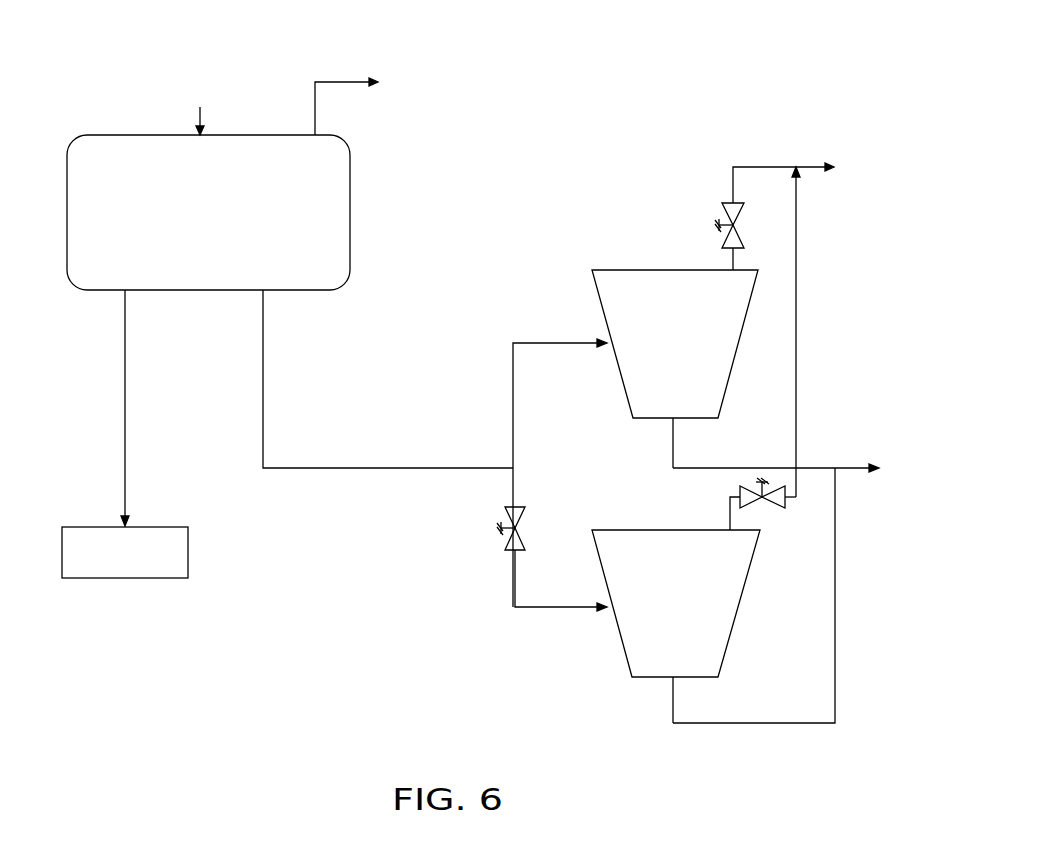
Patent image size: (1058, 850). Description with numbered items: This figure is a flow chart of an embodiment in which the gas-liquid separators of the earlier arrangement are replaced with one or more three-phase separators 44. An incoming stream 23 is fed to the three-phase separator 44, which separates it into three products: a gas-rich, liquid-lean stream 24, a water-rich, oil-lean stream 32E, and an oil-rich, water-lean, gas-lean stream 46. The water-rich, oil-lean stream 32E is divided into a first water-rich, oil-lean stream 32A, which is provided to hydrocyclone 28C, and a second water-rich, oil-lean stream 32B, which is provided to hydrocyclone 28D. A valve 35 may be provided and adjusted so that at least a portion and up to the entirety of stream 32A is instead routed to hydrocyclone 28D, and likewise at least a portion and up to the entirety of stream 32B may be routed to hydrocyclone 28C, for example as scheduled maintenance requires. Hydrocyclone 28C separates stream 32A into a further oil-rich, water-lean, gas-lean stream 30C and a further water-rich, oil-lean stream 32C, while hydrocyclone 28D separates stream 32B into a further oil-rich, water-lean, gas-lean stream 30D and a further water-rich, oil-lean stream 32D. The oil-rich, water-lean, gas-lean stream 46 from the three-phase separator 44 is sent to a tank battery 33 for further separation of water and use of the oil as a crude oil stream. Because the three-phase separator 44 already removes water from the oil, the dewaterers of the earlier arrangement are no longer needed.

The stream 23 is at (203, 114).
The gas-rich, liquid-lean stream 24 is at (357, 80).
The hydrocyclone 28C is at (623, 268).
The hydrocyclone 28D is at (622, 640).
The further oil-rich, water-lean, gas-lean stream 30C is at (728, 192).
The further oil-rich, water-lean, gas-lean stream 30D is at (793, 198).
The first water-rich, oil-lean stream 32A is at (512, 376).
The second water-rich, oil-lean stream 32B is at (513, 582).
The further water-rich, oil-lean stream 32C is at (812, 468).
The further water-rich, oil-lean stream 32D is at (837, 695).
The water-rich, oil-lean stream 32E is at (263, 370).
The tank battery 33 is at (122, 580).
The valve 35 is at (523, 510).
The three-phase separator 44 is at (350, 170).
The oil-rich, water-lean, gas-lean stream 46 is at (125, 380).